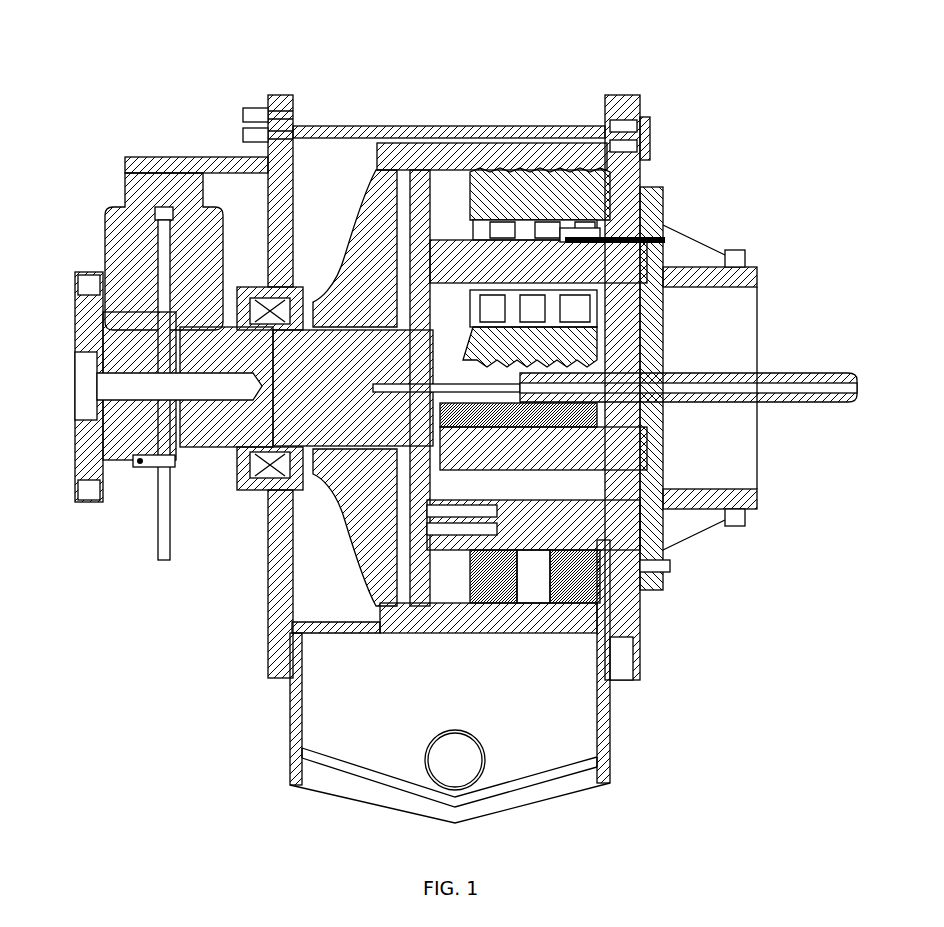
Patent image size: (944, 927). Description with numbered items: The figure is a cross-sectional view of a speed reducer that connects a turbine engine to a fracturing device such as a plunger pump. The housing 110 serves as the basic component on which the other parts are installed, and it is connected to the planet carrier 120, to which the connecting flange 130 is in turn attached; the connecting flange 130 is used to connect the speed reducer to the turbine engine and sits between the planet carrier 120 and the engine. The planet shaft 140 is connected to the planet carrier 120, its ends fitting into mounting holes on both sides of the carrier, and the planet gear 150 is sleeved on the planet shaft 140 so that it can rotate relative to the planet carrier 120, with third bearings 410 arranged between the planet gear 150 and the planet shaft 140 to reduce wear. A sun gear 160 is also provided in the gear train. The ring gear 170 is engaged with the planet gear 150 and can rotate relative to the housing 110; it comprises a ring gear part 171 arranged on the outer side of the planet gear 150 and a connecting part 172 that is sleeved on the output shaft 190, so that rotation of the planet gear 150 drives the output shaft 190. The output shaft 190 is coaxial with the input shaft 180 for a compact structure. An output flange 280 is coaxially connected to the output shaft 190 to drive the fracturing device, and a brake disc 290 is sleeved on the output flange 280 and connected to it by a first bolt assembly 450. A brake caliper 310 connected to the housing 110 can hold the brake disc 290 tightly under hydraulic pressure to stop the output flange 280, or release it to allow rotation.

The housing 110 is at (317, 136).
The planet carrier 120 is at (622, 185).
The connecting flange 130 is at (750, 272).
The planet shaft 140 is at (513, 262).
The planet gear 150 is at (498, 182).
The sun gear 160 is at (585, 352).
The ring gear 170 is at (460, 317).
The ring gear part 171 is at (442, 157).
The connecting part 172 is at (378, 183).
The input shaft 180 is at (790, 400).
The output shaft 190 is at (225, 425).
The output flange 280 is at (86, 290).
The brake disc 290 is at (162, 556).
The brake caliper 310 is at (152, 185).
The third bearing 410 is at (575, 225).
The first bolt assembly 450 is at (133, 468).